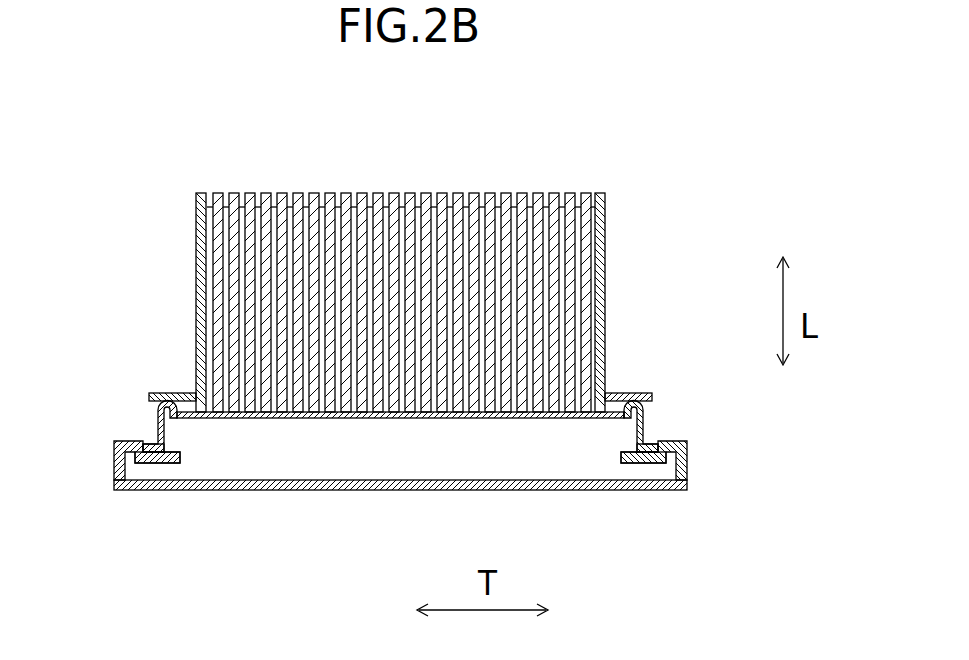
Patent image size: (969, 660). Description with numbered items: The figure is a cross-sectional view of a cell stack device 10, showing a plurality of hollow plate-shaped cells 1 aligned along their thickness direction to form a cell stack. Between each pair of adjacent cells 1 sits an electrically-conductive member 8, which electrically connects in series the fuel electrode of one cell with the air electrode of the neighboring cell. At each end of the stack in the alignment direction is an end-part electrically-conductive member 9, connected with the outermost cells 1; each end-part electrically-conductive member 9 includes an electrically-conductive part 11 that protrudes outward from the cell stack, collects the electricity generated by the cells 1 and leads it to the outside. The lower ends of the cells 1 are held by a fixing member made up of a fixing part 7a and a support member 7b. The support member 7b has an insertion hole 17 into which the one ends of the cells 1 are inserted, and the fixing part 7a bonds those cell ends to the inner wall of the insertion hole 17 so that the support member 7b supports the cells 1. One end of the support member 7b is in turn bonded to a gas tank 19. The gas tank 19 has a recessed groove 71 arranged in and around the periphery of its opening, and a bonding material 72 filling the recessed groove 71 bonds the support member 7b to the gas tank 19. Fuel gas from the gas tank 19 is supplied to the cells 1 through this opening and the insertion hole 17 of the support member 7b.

The cell stack device 10 is at (201, 164).
The cell 1 is at (475, 195).
The electrically-conductive member 8 is at (327, 213).
The end-part electrically-conductive member 9 is at (196, 283).
The electrically-conductive part 11 is at (150, 393).
The fixing part 7a is at (240, 420).
The support member 7b is at (160, 415).
The recessed groove 71 is at (146, 455).
The bonding material 72 is at (145, 442).
The insertion hole 17 is at (623, 417).
The gas tank 19 is at (685, 488).